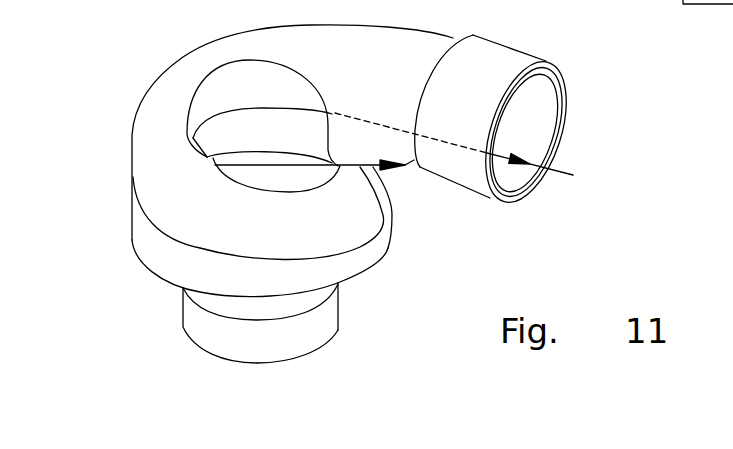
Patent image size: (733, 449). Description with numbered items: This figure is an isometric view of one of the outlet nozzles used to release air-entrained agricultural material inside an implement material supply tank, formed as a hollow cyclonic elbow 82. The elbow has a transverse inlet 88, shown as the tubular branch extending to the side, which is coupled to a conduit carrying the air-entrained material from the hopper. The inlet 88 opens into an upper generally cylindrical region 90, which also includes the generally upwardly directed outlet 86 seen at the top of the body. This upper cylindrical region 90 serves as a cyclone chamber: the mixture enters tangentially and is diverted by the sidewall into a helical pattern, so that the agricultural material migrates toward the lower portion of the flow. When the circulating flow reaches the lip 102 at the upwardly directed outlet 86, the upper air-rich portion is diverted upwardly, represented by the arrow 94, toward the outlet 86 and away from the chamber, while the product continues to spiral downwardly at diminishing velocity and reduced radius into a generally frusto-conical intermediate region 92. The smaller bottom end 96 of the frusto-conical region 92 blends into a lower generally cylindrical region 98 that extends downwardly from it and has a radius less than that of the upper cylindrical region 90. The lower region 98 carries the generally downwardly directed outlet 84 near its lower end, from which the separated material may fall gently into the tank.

The cyclonic elbow 82 is at (138, 98).
The downwardly directed outlet 84 is at (283, 347).
The upwardly directed outlet 86 is at (248, 123).
The transverse inlet 88 is at (538, 126).
The upper cylindrical region 90 is at (140, 200).
The frusto-conical intermediate region 92 is at (217, 302).
The air flow arrow 94 is at (392, 210).
The smaller bottom end 96 is at (308, 315).
The lower cylindrical region 98 is at (233, 345).
The lip 102 is at (297, 185).